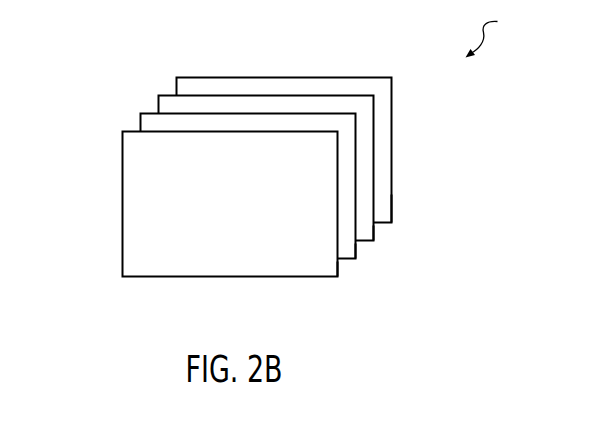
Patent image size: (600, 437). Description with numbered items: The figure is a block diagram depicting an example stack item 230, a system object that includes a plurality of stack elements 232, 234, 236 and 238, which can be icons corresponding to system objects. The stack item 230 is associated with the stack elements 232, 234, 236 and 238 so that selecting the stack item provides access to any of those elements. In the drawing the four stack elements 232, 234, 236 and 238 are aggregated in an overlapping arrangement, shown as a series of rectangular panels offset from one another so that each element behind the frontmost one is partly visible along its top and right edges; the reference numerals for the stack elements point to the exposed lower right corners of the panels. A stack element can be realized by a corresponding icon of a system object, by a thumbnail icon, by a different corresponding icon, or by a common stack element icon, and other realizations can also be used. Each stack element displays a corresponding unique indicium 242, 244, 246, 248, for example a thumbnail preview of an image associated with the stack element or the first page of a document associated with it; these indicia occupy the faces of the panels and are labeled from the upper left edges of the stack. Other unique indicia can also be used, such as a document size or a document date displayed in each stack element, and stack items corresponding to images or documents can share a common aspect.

The stack item 230 is at (498, 38).
The stack element 232 is at (338, 278).
The stack element 234 is at (354, 253).
The stack element 236 is at (373, 236).
The stack element 238 is at (392, 197).
The unique indicium 242 is at (122, 212).
The unique indicium 244 is at (143, 112).
The unique indicium 246 is at (182, 76).
The unique indicium 248 is at (250, 76).